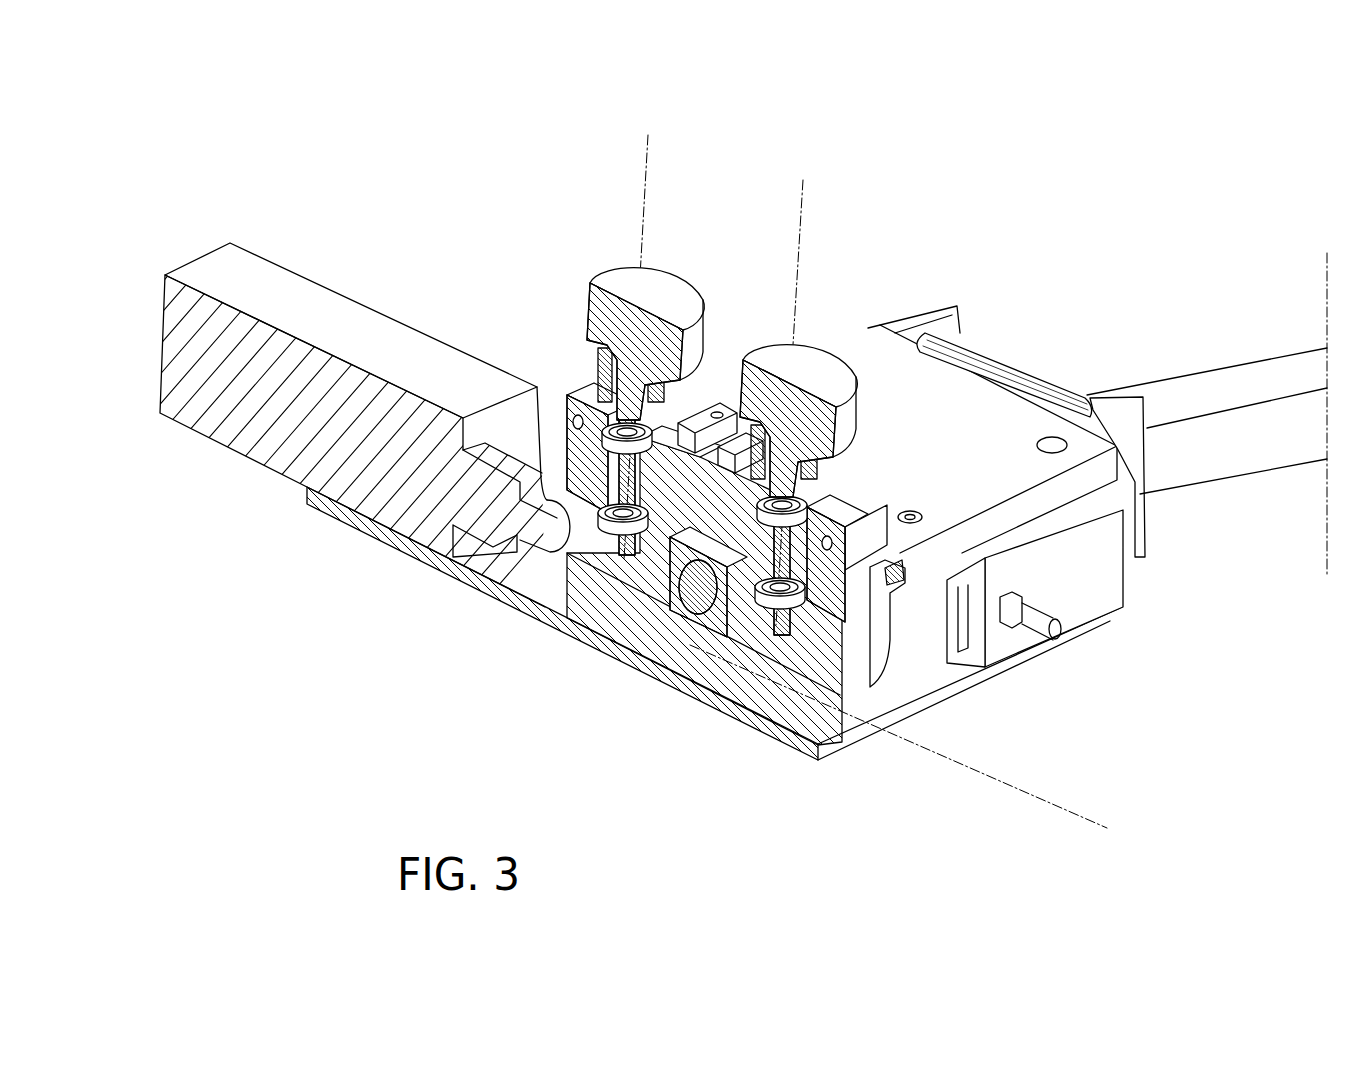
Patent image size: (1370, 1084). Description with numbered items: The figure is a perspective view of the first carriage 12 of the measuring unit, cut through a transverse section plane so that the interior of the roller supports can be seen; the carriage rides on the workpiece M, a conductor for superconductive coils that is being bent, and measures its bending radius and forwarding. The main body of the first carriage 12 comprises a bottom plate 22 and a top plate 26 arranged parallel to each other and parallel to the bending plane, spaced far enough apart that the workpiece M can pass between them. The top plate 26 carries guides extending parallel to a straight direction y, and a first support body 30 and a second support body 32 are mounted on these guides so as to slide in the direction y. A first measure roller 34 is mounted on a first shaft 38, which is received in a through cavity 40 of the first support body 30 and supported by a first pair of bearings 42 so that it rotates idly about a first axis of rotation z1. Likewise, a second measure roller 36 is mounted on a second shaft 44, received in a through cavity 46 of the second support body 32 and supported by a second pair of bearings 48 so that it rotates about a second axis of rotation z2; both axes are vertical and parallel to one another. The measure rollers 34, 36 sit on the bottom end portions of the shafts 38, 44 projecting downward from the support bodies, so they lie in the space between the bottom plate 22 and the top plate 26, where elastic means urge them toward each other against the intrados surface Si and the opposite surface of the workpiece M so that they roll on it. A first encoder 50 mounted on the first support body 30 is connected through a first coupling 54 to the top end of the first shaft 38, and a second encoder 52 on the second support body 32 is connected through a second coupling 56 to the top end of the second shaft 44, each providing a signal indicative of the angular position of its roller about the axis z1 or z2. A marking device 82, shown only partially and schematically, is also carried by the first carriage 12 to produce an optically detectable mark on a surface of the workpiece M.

The marking device 82 is at (360, 325).
The bottom plate 22 is at (789, 742).
The first shaft 38 is at (690, 637).
The second shaft 44 is at (570, 440).
The through cavity 46 is at (605, 510).
The first carriage 12 is at (925, 304).
The first coupling 54 is at (850, 462).
The top plate 26 is at (997, 433).
The workpiece M is at (1203, 390).
The first support body 30 is at (990, 612).
The through cavity 40 is at (873, 558).
The second support body 32 is at (565, 397).
The second pair of bearings 48 is at (568, 387).
The first pair of bearings 42 is at (620, 657).
The first encoder 50 is at (847, 460).
The second axis of rotation z2 is at (648, 170).
The first axis of rotation z1 is at (800, 252).
The second measure roller 36 is at (615, 530).
The second coupling 56 is at (607, 310).
The second encoder 52 is at (713, 345).
The intrados surface Si is at (668, 672).
The first measure roller 34 is at (803, 645).
The straight direction y is at (1057, 797).